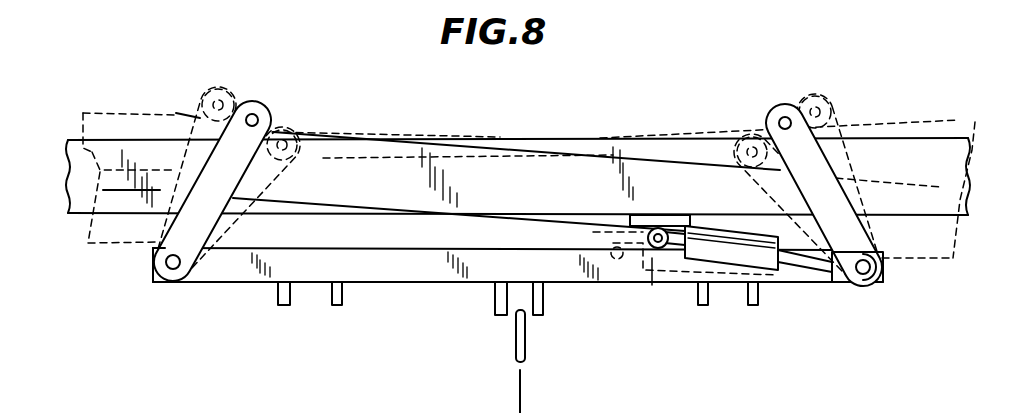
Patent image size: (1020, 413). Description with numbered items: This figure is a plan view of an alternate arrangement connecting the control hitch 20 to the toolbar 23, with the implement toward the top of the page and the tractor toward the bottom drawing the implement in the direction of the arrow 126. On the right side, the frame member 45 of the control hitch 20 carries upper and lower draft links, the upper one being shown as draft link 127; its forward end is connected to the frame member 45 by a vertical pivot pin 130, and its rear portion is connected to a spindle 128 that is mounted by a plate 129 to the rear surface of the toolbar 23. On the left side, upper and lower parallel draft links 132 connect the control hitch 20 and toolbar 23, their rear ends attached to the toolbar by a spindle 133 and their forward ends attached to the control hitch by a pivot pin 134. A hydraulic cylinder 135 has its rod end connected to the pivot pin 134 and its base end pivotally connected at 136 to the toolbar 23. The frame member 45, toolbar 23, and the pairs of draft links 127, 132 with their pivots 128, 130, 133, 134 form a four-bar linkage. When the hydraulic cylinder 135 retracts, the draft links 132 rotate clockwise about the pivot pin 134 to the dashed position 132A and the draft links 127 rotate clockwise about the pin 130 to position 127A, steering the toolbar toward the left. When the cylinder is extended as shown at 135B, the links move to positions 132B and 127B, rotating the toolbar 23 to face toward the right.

The control hitch 20 is at (428, 286).
The toolbar 23 is at (548, 196).
The frame member 45 is at (247, 268).
The arrow 126 is at (522, 388).
The draft links 127 is at (253, 108).
The draft links position 127A is at (266, 210).
The draft links position 127B is at (226, 95).
The spindle 128 is at (280, 128).
The plate 129 is at (292, 121).
The vertical pivot pin 130 is at (172, 275).
The draft links 132 is at (783, 105).
The draft links position 132A is at (855, 154).
The draft links position 132B is at (757, 166).
The spindle 133 is at (822, 100).
The pivot pin 134 is at (862, 280).
The hydraulic cylinder 135 is at (762, 268).
The hydraulic cylinder extended position 135B is at (682, 326).
The pivotal connection 136 is at (657, 228).